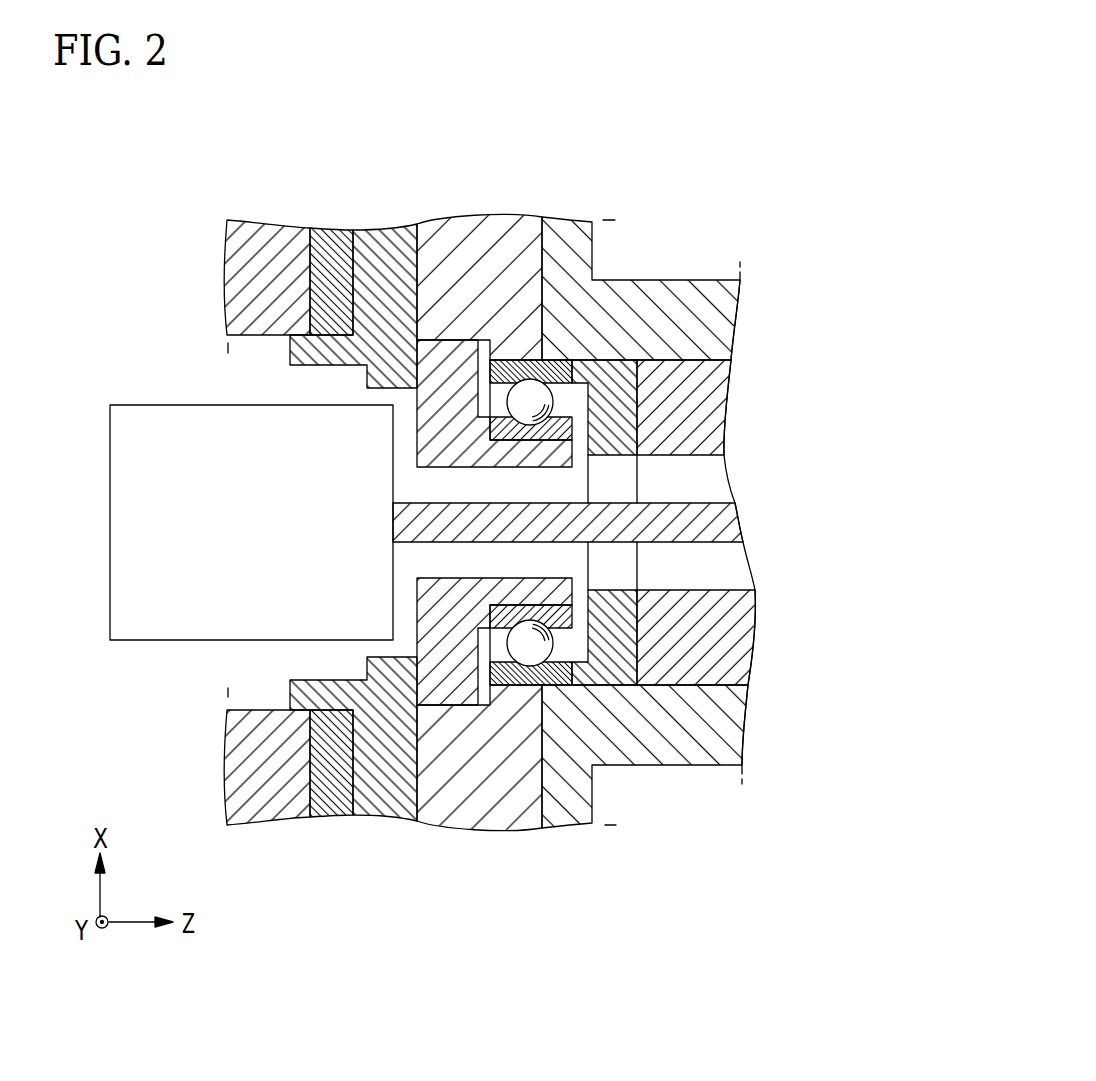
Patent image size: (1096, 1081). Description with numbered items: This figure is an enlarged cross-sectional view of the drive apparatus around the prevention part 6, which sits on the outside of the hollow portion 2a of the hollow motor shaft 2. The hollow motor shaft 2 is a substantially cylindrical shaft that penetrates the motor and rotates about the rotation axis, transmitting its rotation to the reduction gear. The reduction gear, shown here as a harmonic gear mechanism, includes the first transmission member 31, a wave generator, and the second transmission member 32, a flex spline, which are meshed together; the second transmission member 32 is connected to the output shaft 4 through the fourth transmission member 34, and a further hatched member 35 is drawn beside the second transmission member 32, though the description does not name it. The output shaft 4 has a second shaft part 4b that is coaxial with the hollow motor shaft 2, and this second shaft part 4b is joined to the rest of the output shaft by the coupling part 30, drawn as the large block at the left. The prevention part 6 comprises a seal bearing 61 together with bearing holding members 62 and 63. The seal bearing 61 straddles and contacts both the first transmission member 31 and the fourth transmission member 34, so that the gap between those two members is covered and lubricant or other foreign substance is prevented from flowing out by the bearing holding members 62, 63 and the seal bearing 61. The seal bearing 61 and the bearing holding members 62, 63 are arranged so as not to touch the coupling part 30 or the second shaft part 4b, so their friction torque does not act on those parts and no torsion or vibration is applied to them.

The hollow motor shaft 2 is at (697, 387).
The hollow portion 2a is at (714, 478).
The output shaft 4 is at (643, 515).
The second shaft part 4b is at (722, 524).
The prevention part 6 is at (527, 467).
The seal bearing 61 is at (515, 367).
The bearing holding member 62 is at (458, 358).
The bearing holding member 63 is at (613, 380).
The coupling part 30 is at (157, 618).
The first transmission member 31 is at (640, 307).
The second transmission member 32 is at (337, 250).
The fourth transmission member 34 is at (263, 260).
The spacer 35 is at (385, 258).